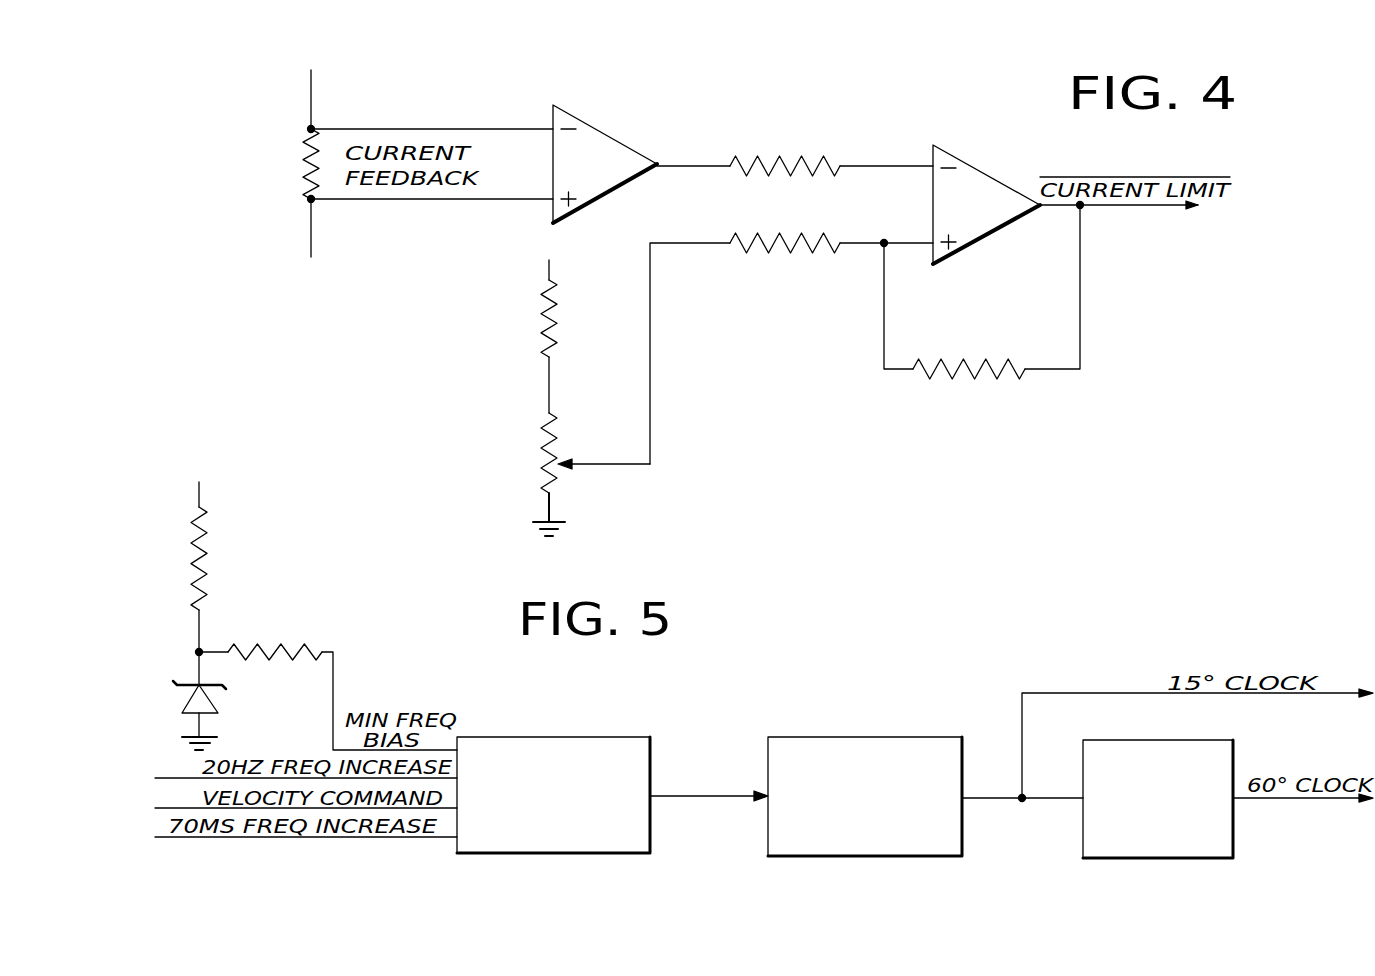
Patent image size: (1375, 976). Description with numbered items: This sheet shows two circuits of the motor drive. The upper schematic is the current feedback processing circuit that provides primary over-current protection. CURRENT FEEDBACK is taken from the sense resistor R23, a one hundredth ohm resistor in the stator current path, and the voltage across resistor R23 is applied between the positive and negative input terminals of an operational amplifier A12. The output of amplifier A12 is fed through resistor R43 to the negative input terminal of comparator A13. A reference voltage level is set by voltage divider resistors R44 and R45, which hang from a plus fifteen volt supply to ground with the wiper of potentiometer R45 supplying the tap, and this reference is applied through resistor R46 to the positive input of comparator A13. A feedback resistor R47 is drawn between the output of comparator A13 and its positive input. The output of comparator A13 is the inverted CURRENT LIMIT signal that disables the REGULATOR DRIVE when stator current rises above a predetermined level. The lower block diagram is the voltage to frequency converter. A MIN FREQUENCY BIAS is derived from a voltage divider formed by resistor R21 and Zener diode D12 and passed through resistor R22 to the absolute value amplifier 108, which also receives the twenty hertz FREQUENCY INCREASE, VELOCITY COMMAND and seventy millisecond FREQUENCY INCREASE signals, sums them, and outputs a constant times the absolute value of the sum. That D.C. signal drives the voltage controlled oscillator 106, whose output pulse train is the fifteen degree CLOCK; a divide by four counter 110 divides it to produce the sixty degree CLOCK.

In FIG. 4, the resistor R23 is at (245, 163).
In FIG. 4, the operational amplifier A12 is at (605, 164).
In FIG. 4, the resistor R43 is at (785, 152).
In FIG. 4, the comparator A13 is at (986, 204).
In FIG. 4, the resistor R46 is at (791, 348).
In FIG. 4, the feedback resistor R47 is at (982, 307).
In FIG. 4, the voltage divider resistor R44 is at (527, 324).
In FIG. 4, the voltage divider resistor R45 is at (555, 474).
In FIG. 5, the resistor R21 is at (222, 554).
In FIG. 5, the resistor R22 is at (328, 682).
In FIG. 5, the Zener diode D12 is at (225, 701).
In FIG. 5, the absolute value amplifier 108 is at (595, 737).
In FIG. 5, the voltage controlled oscillator 106 is at (877, 737).
In FIG. 5, the divide by four counter 110 is at (1207, 740).